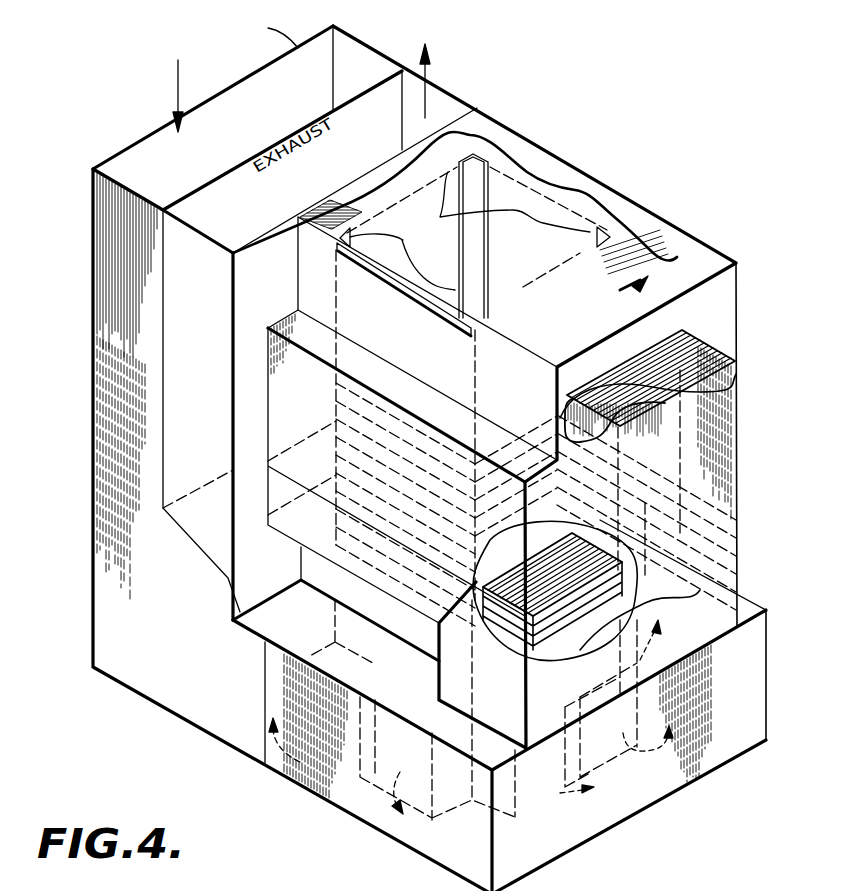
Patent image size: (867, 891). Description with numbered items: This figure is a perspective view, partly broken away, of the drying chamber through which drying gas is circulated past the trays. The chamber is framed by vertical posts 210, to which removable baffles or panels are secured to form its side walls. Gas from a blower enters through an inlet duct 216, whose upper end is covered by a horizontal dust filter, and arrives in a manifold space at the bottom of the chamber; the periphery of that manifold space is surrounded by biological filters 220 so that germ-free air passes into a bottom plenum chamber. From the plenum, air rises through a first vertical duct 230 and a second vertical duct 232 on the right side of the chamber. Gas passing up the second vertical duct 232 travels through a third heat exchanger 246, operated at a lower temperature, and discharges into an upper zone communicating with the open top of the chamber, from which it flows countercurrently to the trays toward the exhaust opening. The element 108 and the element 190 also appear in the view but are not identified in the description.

The cabinet housing 108 is at (677, 253).
The inlet duct 216 is at (261, 114).
The vertical posts 210 is at (449, 236).
The rail 190 is at (398, 290).
The third heat exchanger 246 is at (712, 345).
The second vertical duct 232 is at (568, 557).
The first vertical duct 230 is at (693, 605).
The biological filters 220 is at (387, 768).